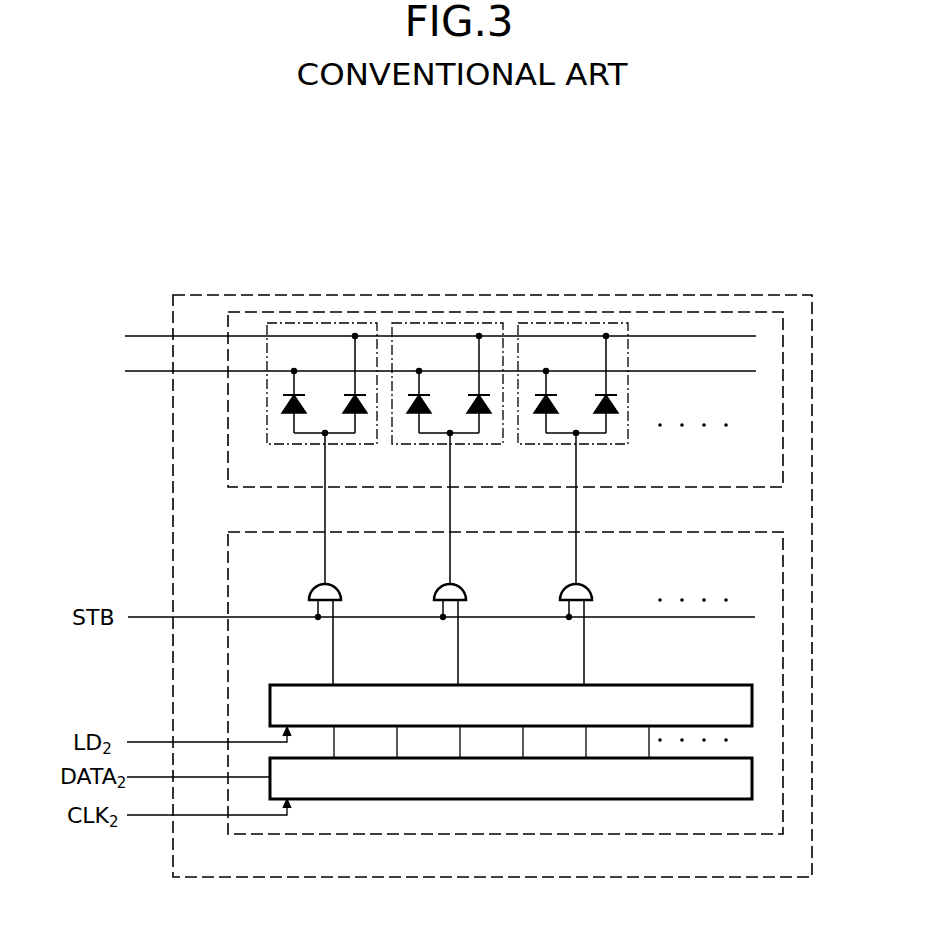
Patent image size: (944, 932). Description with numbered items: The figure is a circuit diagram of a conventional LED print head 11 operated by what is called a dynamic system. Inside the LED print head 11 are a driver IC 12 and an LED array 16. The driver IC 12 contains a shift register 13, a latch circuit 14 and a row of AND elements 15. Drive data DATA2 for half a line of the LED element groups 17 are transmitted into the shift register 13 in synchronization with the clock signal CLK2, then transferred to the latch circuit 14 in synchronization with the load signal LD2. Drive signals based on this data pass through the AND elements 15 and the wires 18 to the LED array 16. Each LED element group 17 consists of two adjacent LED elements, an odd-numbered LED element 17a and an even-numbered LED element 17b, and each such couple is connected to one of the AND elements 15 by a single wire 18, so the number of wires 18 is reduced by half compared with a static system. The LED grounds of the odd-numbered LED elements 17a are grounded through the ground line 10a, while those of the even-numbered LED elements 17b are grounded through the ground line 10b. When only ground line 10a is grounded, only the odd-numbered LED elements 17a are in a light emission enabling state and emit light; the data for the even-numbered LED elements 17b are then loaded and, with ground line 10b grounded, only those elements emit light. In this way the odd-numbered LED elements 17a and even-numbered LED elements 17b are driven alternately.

The ground line 10a is at (146, 373).
The ground line 10b is at (143, 333).
The LED print head 11 is at (813, 318).
The driver IC 12 is at (784, 587).
The shift register 13 is at (754, 775).
The latch circuit 14 is at (754, 705).
The AND element 15 is at (338, 591).
The LED array 16 is at (784, 388).
The LED element group 17 is at (321, 323).
The odd-numbered LED element 17a is at (282, 406).
The even-numbered LED element 17b is at (360, 415).
The wire 18 is at (324, 505).